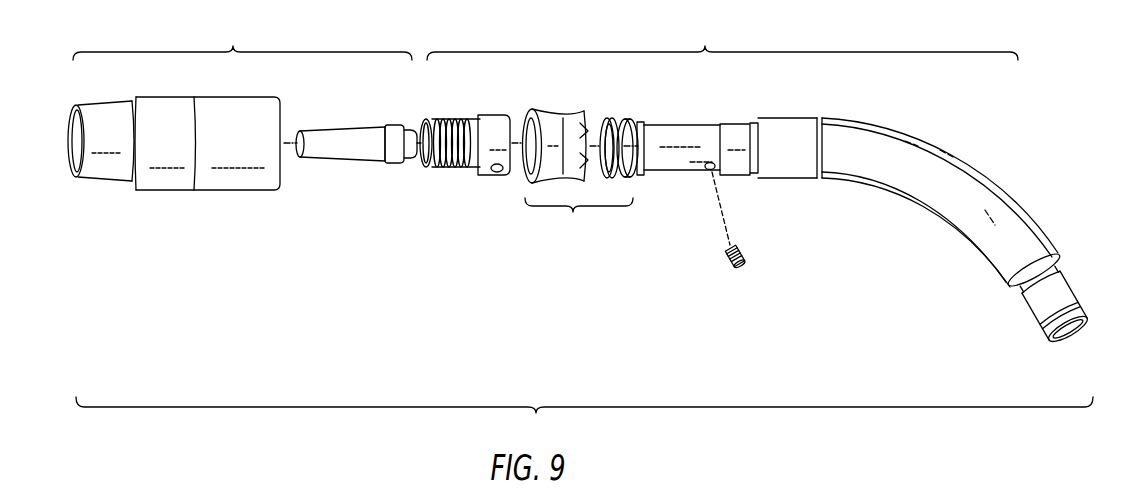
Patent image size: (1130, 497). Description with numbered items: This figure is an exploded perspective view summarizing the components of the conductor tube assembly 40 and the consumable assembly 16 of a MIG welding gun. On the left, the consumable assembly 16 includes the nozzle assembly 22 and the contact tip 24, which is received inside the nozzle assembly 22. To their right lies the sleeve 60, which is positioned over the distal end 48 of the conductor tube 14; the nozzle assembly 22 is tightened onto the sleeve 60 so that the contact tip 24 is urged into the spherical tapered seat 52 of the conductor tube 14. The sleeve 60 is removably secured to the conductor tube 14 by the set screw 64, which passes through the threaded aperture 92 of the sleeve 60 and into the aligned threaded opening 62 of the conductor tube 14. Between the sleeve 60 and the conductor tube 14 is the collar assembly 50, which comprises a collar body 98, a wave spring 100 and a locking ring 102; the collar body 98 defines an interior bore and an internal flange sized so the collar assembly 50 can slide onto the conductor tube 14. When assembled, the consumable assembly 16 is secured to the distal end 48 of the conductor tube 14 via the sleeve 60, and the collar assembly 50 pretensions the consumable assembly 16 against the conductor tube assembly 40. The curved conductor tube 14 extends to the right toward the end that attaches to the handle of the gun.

The conductor tube 14 is at (931, 202).
The consumable assembly 16 is at (242, 35).
The nozzle assembly 22 is at (185, 192).
The contact tip 24 is at (347, 160).
The conductor tube assembly 40 is at (722, 35).
The distal end of the conductor tube 48 is at (658, 121).
The collar assembly 50 is at (579, 221).
The spherical tapered seat 52 is at (1023, 316).
The sleeve 60 is at (460, 172).
The threaded opening 62 is at (714, 176).
The set screw 64 is at (746, 258).
The threaded aperture 92 is at (497, 173).
The collar body 98 is at (560, 121).
The wave spring 100 is at (607, 120).
The locking ring 102 is at (636, 124).